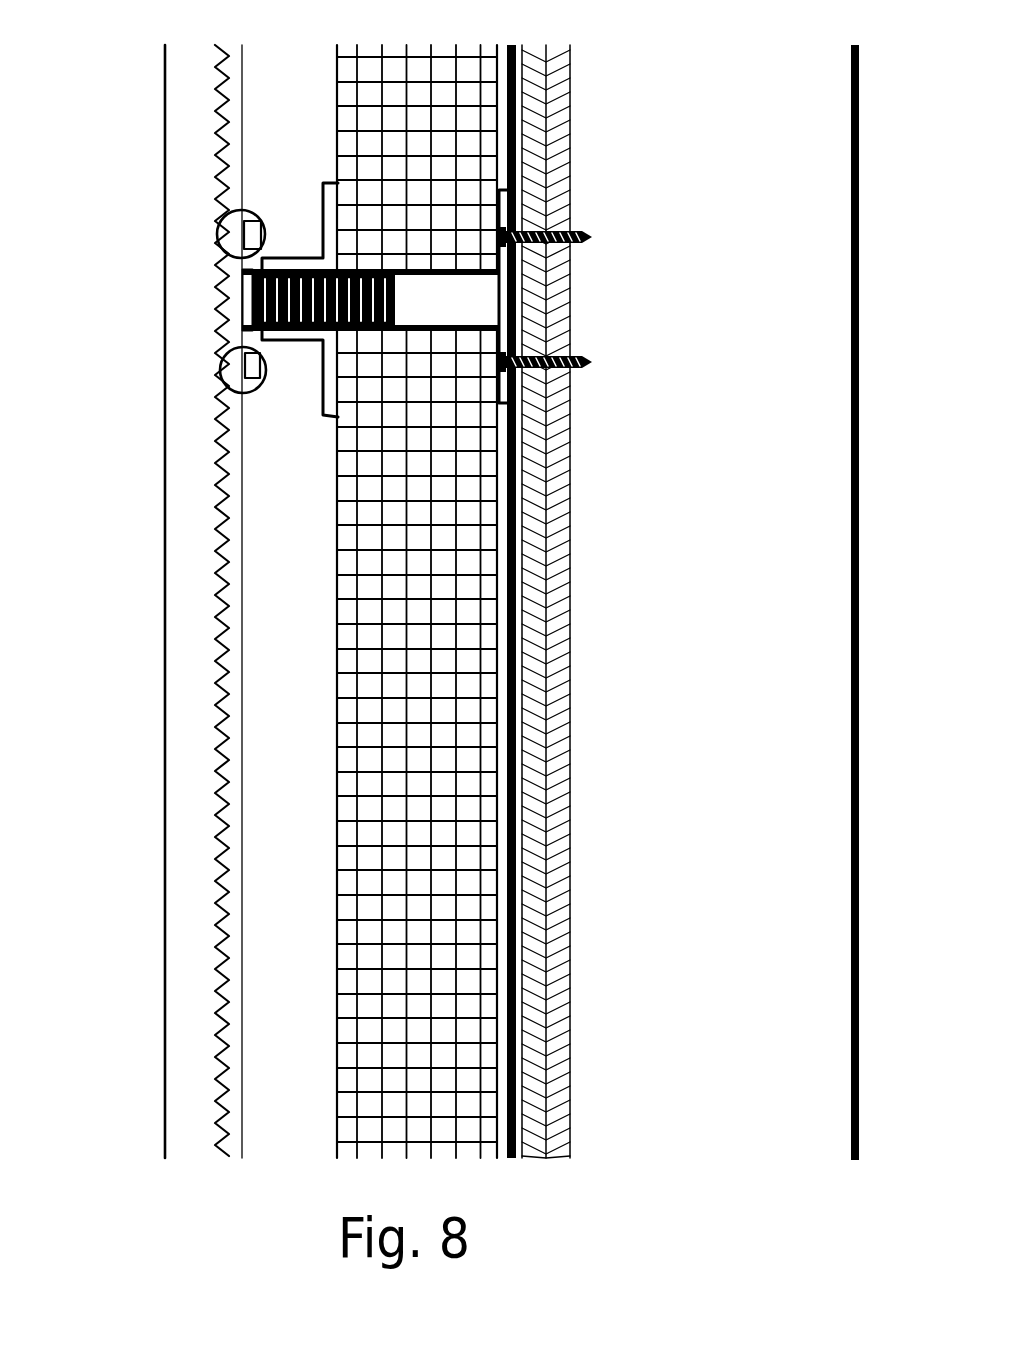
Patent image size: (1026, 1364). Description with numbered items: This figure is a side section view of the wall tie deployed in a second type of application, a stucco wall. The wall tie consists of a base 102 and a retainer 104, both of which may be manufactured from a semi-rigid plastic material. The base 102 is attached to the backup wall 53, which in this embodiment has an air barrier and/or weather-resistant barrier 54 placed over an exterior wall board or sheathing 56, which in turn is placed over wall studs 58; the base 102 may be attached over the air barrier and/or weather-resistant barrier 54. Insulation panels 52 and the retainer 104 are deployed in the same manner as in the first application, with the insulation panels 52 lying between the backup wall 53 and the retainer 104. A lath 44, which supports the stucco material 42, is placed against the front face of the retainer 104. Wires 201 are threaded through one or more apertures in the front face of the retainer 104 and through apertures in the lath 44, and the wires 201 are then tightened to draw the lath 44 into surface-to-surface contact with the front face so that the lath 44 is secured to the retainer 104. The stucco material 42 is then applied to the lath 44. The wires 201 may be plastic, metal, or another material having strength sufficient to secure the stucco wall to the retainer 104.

The stucco material 42 is at (187, 578).
The lath 44 is at (227, 490).
The insulation panels 52 is at (440, 673).
The backup wall 53 is at (531, 1197).
The air barrier and/or weather-resistant barrier 54 is at (512, 717).
The sheathing 56 is at (542, 795).
The wall studs 58 is at (640, 1112).
The base 102 is at (477, 298).
The retainer 104 is at (320, 408).
The wires 201 is at (268, 232).